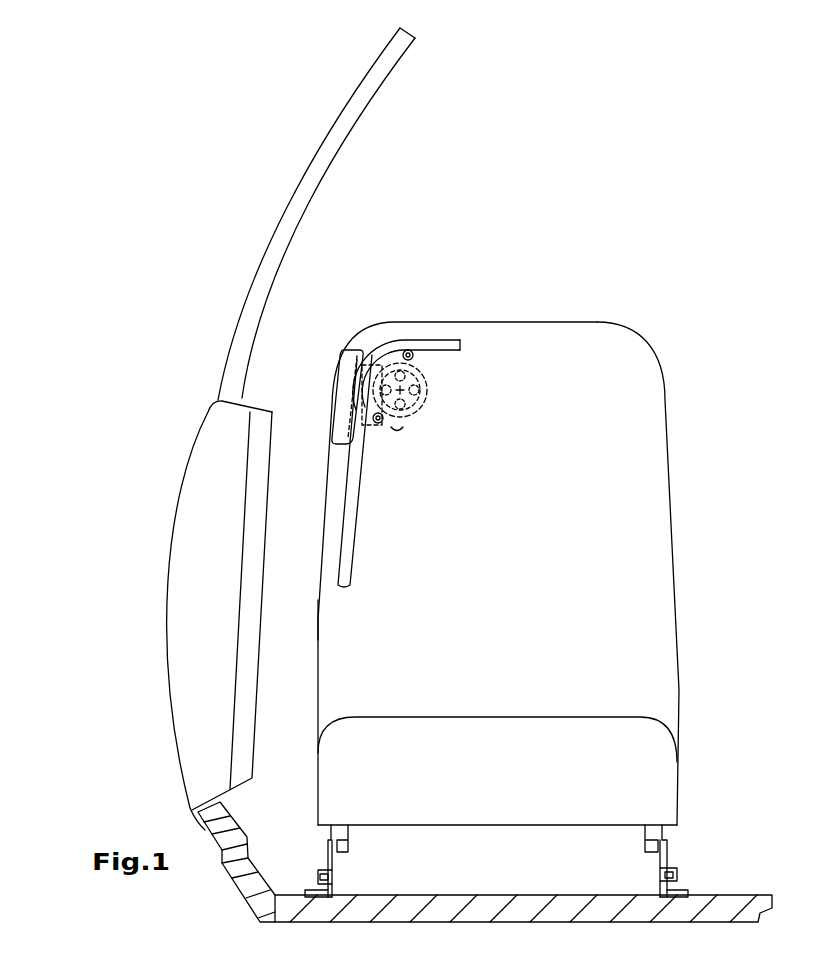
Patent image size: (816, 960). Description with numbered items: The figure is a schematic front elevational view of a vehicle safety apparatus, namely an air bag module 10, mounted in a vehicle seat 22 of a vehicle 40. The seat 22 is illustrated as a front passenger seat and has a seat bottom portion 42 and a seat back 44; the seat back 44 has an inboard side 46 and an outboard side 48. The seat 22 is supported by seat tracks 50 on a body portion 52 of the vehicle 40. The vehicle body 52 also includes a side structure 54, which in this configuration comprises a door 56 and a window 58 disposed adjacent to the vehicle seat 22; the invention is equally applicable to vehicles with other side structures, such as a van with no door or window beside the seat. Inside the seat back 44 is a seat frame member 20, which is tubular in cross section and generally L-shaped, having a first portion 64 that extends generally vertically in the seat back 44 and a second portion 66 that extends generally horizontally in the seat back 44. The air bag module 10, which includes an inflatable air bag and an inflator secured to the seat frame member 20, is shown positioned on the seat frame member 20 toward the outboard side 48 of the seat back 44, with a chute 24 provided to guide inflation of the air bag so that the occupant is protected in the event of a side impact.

The air bag module 10 is at (443, 404).
The seat frame member 20 is at (385, 430).
The vehicle seat 22 is at (522, 582).
The chute 24 is at (336, 388).
The vehicle 40 is at (221, 429).
The seat bottom portion 42 is at (628, 772).
The seat back 44 is at (617, 528).
The inboard side 46 is at (669, 430).
The outboard side 48 is at (318, 613).
The seat tracks 50 is at (333, 883).
The body portion 52 is at (240, 905).
The side structure 54 is at (186, 366).
The door 56 is at (172, 543).
The window 58 is at (310, 153).
The first portion 64 is at (358, 498).
The second portion 66 is at (433, 338).